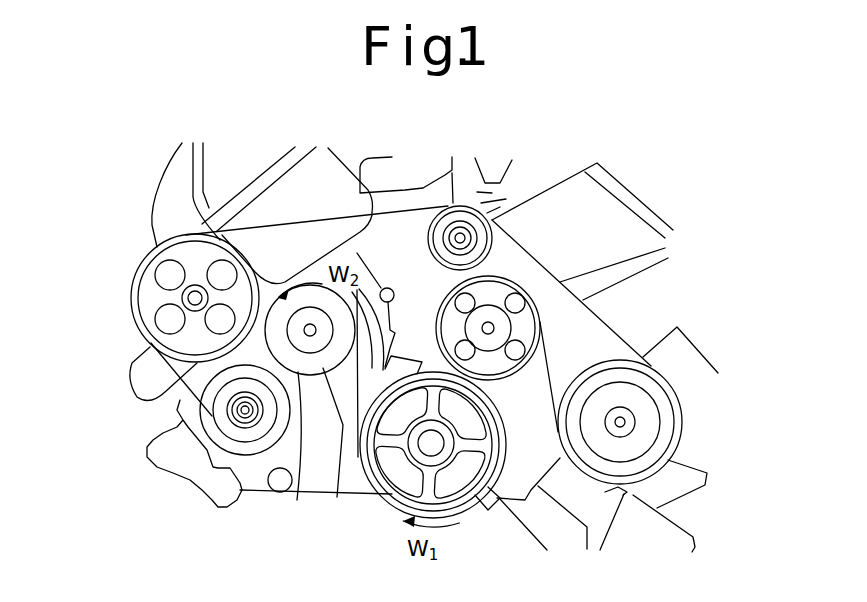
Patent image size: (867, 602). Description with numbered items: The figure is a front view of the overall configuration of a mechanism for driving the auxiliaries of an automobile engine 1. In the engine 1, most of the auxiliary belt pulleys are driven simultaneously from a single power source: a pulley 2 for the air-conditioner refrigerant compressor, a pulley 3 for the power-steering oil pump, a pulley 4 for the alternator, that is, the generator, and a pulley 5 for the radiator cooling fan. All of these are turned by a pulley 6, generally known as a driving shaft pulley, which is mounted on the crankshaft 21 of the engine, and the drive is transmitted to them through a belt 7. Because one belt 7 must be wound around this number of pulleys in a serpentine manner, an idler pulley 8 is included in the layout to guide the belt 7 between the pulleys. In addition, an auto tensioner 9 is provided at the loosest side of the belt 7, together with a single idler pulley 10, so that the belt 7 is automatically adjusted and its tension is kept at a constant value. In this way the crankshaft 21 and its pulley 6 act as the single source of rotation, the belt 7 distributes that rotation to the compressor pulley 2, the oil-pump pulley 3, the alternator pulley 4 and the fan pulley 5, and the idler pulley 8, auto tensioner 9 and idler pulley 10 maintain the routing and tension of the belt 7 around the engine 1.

The engine 1 is at (665, 190).
The pulley for the air-conditioner refrigerant compressor 2 is at (668, 428).
The pulley for the power-steering oil pump 3 is at (152, 292).
The pulley for the alternator 4 is at (233, 433).
The pulley for the radiator cooling fan 5 is at (502, 295).
The pulley of the crankshaft 6 is at (393, 498).
The belt 7 is at (273, 223).
The idler pulley 8 is at (430, 237).
The auto tensioner 9 is at (337, 497).
The idler pulley 10 is at (312, 468).
The crankshaft 21 is at (437, 447).